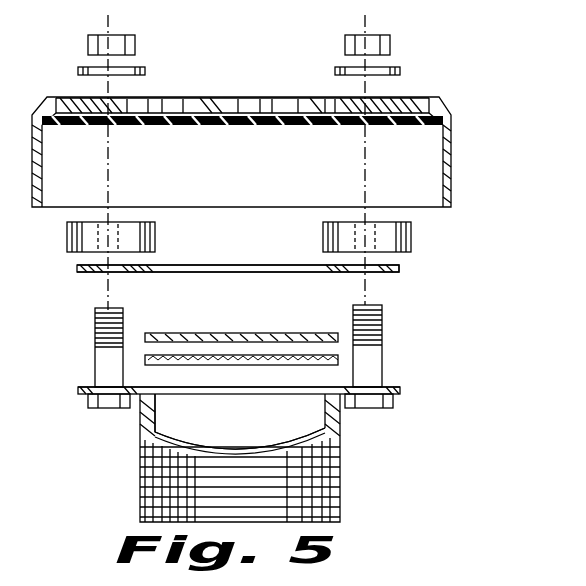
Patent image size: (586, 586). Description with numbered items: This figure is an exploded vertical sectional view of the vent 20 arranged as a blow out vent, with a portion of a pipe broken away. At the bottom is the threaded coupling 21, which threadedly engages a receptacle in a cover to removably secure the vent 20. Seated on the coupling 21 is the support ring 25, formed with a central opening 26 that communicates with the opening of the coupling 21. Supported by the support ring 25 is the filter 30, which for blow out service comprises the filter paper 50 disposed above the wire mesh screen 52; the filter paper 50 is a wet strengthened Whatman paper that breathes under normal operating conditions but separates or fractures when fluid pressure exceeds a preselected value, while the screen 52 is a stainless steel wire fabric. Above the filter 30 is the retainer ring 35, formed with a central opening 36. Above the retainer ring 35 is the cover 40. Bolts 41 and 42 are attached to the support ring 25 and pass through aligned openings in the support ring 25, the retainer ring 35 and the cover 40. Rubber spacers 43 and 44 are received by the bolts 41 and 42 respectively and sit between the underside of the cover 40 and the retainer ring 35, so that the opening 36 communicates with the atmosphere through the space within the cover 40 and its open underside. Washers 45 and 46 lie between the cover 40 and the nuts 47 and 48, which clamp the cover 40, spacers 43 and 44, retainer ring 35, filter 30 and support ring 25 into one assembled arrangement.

The vent 20 is at (52, 88).
The threaded coupling 21 is at (140, 485).
The support ring 25 is at (389, 389).
The central opening 26 is at (322, 392).
The filter 30 is at (133, 303).
The retainer ring 35 is at (399, 271).
The central opening 36 is at (169, 267).
The cover 40 is at (204, 100).
The bolt 41 is at (103, 362).
The bolt 42 is at (368, 404).
The rubber spacer 43 is at (125, 240).
The rubber spacer 44 is at (343, 236).
The washer 45 is at (143, 70).
The washer 46 is at (336, 71).
The nut 47 is at (134, 46).
The nut 48 is at (344, 42).
The filter paper 50 is at (268, 334).
The wire mesh screen 52 is at (233, 367).